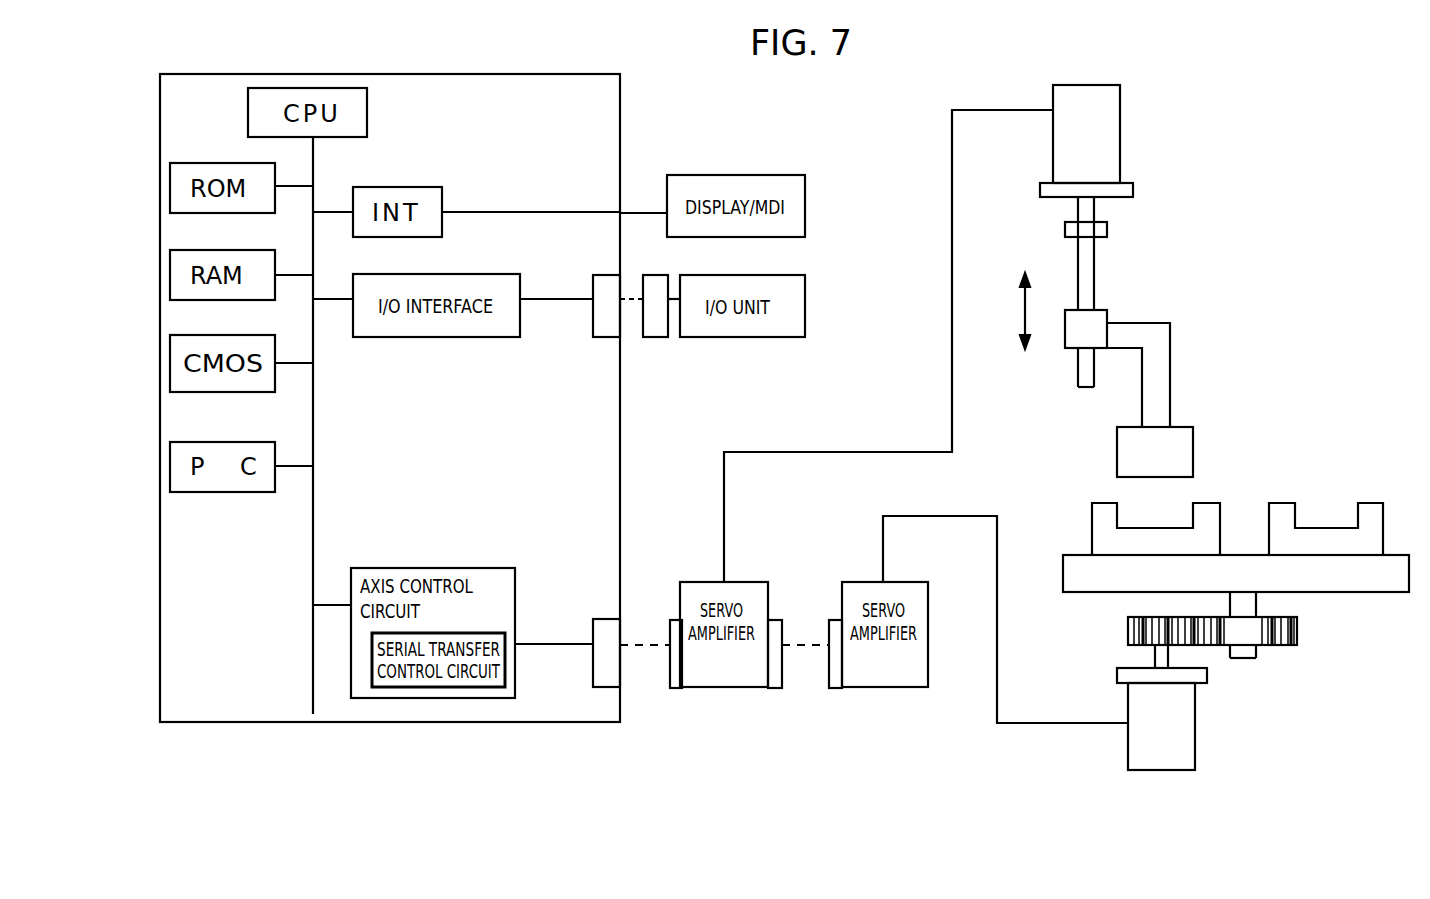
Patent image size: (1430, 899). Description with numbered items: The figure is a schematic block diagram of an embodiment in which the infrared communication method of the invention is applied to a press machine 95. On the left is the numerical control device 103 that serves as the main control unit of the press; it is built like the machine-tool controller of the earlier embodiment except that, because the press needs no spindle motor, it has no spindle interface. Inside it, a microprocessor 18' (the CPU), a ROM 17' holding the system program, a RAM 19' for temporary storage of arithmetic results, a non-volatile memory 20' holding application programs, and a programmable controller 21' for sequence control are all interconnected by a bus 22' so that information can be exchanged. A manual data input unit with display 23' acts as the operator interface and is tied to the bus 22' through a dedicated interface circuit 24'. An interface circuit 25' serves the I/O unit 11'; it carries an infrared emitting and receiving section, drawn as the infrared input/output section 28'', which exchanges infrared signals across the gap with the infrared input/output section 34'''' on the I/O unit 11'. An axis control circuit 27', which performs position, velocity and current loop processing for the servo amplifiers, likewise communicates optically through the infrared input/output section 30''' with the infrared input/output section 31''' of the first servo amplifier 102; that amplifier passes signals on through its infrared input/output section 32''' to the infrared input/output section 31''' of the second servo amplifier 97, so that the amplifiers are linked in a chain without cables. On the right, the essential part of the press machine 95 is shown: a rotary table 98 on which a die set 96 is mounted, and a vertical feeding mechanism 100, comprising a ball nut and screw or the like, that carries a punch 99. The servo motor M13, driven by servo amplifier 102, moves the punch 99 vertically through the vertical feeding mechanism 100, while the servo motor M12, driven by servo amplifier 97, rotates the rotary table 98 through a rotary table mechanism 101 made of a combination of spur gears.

The numerical control device 103 is at (620, 107).
The microprocessor 18' is at (345, 112).
The ROM 17' is at (211, 188).
The RAM 19' is at (211, 273).
The non-volatile memory 20' is at (210, 363).
The programmable controller 21' is at (211, 467).
The bus 22' is at (354, 425).
The dedicated interface circuit 24' is at (466, 189).
The interface circuit 25' is at (453, 282).
The axis control circuit 27' is at (453, 608).
The infrared input/output section 28'' is at (578, 332).
The infrared input/output section 30''' is at (603, 699).
The manual data input unit with display 23' is at (716, 180).
The I/O unit 11' is at (768, 297).
The infrared input/output section 34'''' is at (664, 337).
The servo amplifier 102 is at (750, 680).
The infrared input/output section 31''' is at (744, 642).
The infrared input/output section 32''' is at (807, 682).
The servo amplifier 97 is at (906, 677).
The press machine 95 is at (1202, 429).
The servo motor M13 is at (1103, 120).
The vertical feeding mechanism 100 is at (1128, 285).
The punch 99 is at (1175, 457).
The die set 96 is at (1205, 510).
The rotary table 98 is at (1377, 580).
The rotary table mechanism 101 is at (1272, 660).
The servo motor M12 is at (1178, 744).